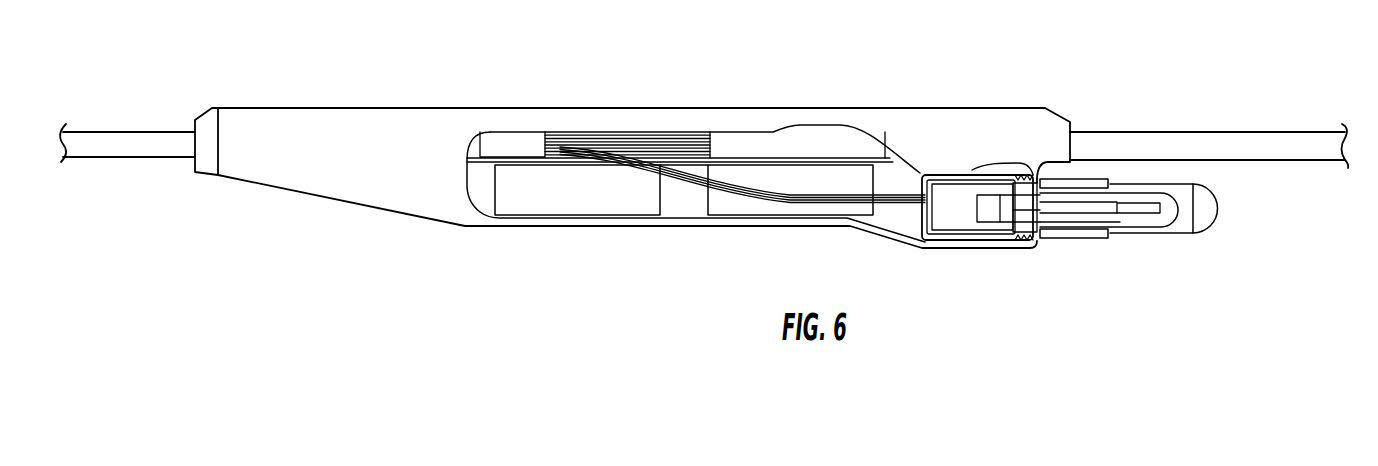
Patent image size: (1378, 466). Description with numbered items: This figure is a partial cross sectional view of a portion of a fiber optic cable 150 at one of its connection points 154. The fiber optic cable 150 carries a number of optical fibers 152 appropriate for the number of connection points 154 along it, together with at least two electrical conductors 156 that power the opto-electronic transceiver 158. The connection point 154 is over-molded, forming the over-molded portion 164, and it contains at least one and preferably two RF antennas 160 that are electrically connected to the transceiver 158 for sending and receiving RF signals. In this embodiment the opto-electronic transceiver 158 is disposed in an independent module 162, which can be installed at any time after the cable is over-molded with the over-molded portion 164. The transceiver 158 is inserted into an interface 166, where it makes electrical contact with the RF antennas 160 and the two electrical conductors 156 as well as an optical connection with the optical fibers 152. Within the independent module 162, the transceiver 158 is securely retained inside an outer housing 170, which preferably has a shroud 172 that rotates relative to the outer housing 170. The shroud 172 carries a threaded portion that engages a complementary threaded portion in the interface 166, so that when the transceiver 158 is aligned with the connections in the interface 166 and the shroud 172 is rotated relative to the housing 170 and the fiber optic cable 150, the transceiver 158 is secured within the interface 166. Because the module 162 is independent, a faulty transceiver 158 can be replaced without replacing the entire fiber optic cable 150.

The fiber optic cable 150 is at (585, 300).
The optical fibers 152 is at (640, 138).
The connection point 154 is at (1062, 80).
The electrical conductors 156 is at (595, 141).
The opto-electronic transceiver 158 is at (1135, 223).
The RF antennas 160 is at (637, 205).
The independent module 162 is at (1213, 203).
The over-molded portion 164 is at (998, 108).
The interface 166 is at (1050, 255).
The outer housing 170 is at (1197, 226).
The shroud 172 is at (1110, 183).